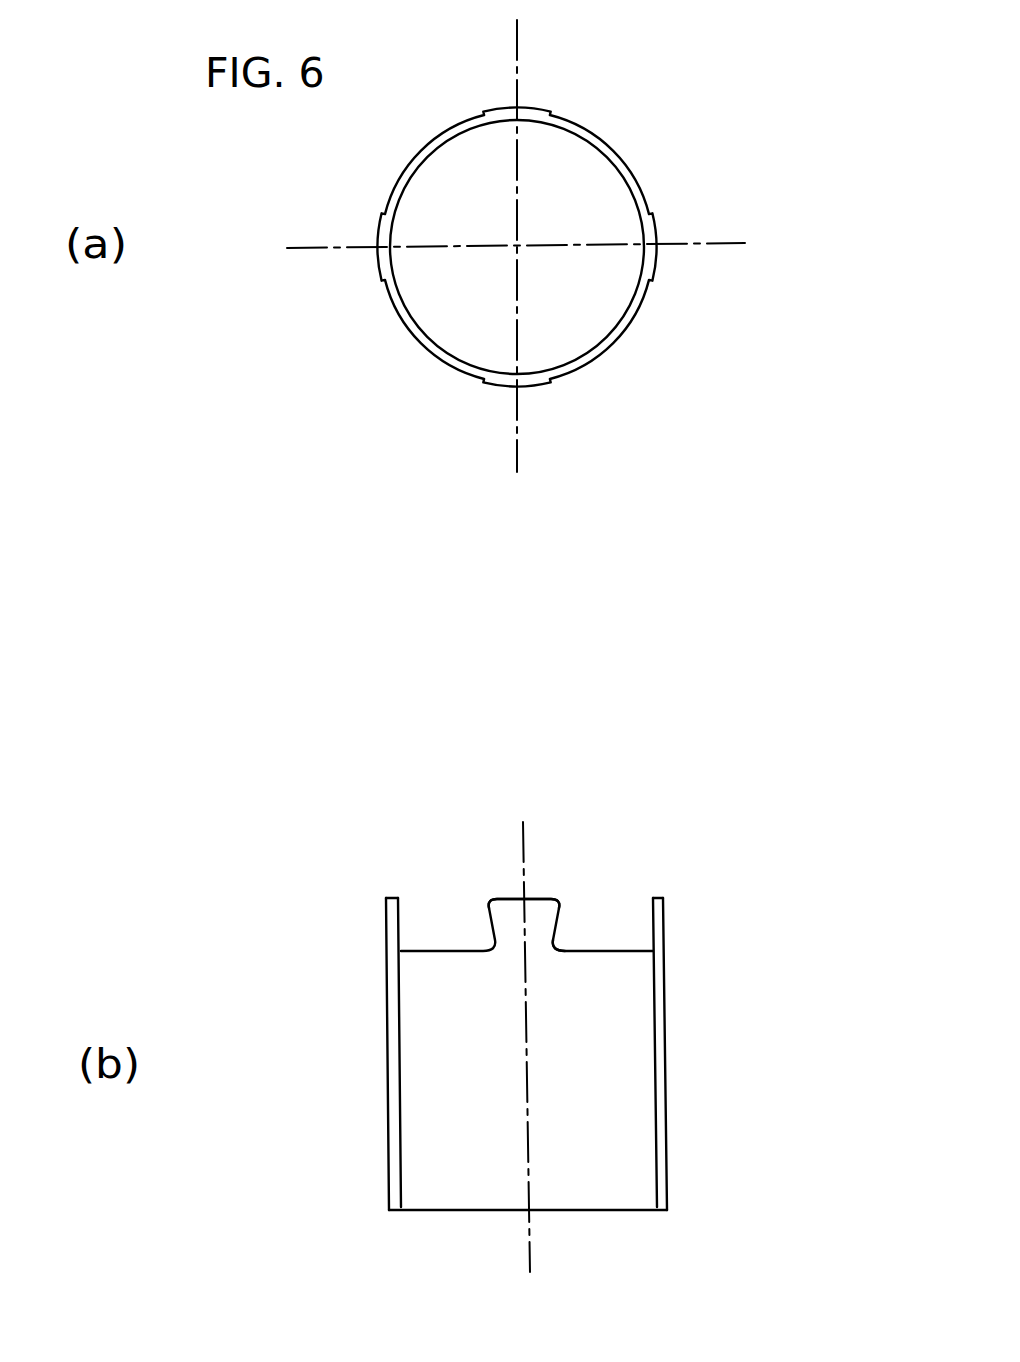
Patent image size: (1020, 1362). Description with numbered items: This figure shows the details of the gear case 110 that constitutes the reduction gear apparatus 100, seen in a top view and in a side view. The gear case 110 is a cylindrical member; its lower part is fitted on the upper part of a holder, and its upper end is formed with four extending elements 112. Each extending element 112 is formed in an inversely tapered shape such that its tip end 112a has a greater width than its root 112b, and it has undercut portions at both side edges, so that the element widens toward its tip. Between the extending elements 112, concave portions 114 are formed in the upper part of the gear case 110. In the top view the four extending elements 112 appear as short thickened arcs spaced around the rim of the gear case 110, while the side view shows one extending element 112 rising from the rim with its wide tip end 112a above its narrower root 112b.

The reduction gear apparatus 100 is at (750, 867).
The gear case 110 is at (658, 1060).
The extending element 112 is at (527, 112).
The tip end 112a is at (483, 909).
The root 112b is at (555, 945).
The concave portion 114 is at (615, 160).